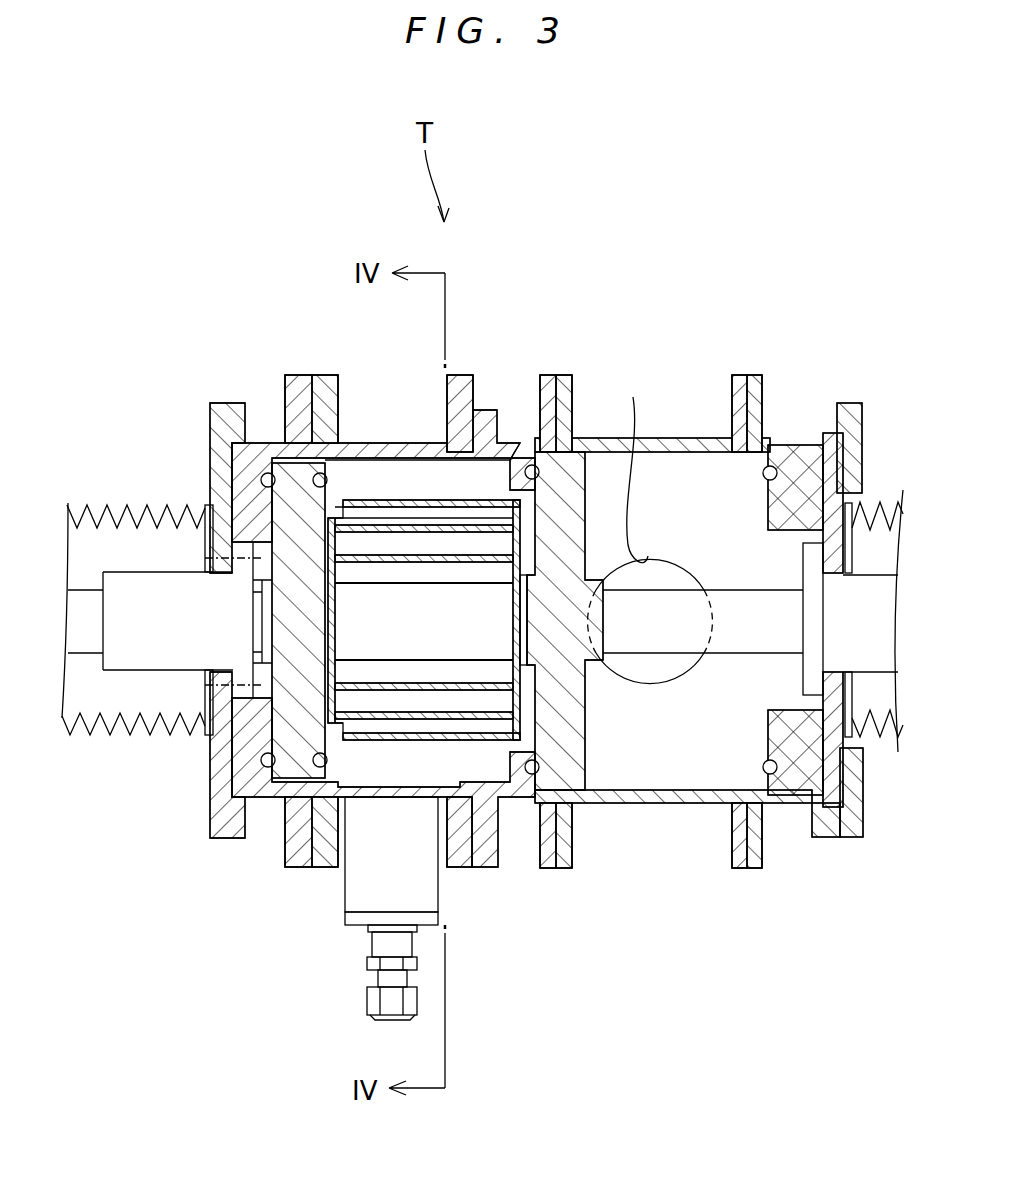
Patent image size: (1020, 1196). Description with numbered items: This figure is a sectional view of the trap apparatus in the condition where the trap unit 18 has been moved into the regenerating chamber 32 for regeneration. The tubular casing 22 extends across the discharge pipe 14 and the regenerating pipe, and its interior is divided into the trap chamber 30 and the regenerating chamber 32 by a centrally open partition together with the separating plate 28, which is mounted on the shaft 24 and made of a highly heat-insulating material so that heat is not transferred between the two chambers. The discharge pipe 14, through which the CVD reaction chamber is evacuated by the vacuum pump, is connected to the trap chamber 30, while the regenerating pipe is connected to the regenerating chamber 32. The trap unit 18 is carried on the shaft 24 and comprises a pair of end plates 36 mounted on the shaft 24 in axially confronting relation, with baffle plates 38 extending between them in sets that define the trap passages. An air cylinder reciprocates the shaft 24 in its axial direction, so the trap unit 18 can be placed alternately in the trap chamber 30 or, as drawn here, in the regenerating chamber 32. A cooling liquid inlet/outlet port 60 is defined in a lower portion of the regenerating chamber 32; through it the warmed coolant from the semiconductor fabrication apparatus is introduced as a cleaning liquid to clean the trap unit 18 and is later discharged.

The discharge pipe 14 is at (650, 524).
The trap unit 18 is at (409, 466).
The tubular casing 22 is at (675, 443).
The shaft 24 is at (745, 610).
The separating plate 28 is at (575, 715).
The trap chamber 30 is at (727, 473).
The regenerating chamber 32 is at (373, 468).
The end plates 36 is at (282, 732).
The baffle plates 38 is at (408, 735).
The cooling liquid inlet/outlet port 60 is at (365, 1000).